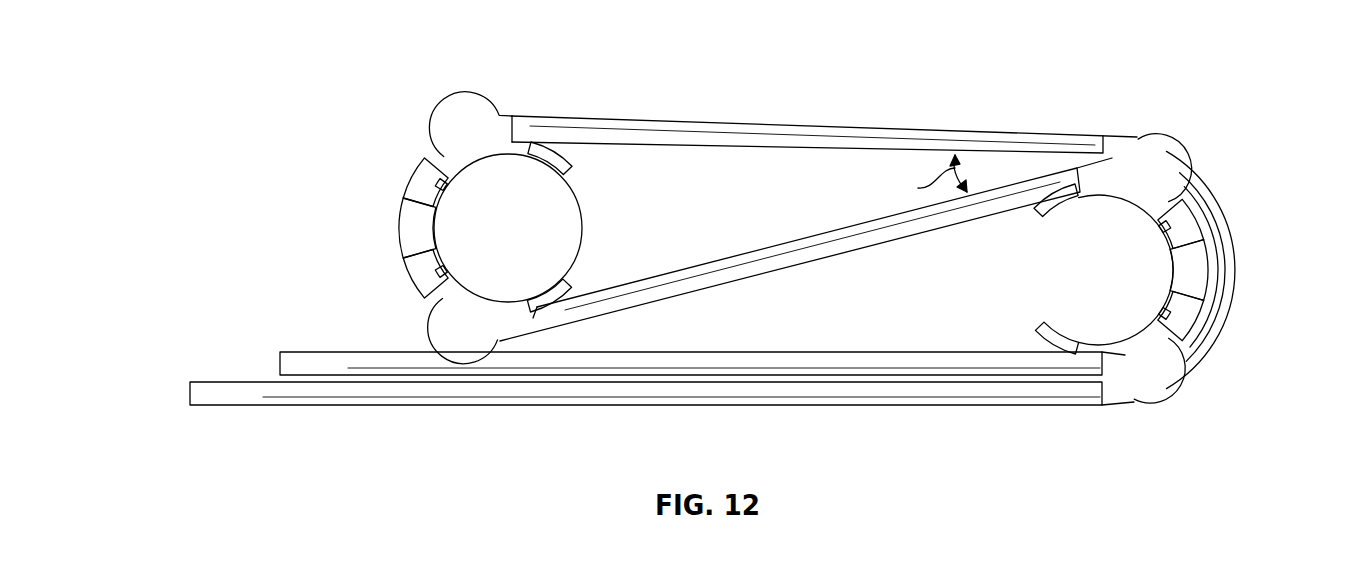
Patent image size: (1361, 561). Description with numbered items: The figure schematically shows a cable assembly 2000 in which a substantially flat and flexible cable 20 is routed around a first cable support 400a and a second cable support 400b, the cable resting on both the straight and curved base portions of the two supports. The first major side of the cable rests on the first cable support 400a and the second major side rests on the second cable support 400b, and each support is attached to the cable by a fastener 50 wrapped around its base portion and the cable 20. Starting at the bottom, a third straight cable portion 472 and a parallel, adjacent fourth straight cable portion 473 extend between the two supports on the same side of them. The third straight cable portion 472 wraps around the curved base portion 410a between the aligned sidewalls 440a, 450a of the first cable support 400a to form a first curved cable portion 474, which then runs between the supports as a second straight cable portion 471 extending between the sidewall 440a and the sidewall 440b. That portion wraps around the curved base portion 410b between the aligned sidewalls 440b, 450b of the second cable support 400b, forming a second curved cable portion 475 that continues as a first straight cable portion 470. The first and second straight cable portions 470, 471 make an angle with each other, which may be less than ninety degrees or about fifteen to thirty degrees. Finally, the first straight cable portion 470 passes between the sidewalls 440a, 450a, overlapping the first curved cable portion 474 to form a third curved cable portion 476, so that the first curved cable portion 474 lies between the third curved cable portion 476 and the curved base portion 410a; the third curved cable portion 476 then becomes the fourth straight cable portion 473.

The cable assembly 2000 is at (360, 75).
The substantially flat and flexible cable 20 is at (749, 125).
The first straight cable portion 470 is at (968, 142).
The second straight cable portion 471 is at (755, 250).
The third straight cable portion 472 is at (922, 352).
The fourth straight cable portion 473 is at (922, 398).
The first cable support 400a is at (1065, 330).
The second cable support 400b is at (547, 167).
The curved base portion of first cable support 410a is at (1177, 303).
The curved base portion of second cable support 410b is at (440, 262).
The sidewall of first cable support 440a is at (1152, 150).
The sidewall of second cable support 440b is at (440, 320).
The sidewall of first cable support 450a is at (1150, 387).
The sidewall of second cable support 450b is at (463, 103).
The first curved cable portion 474 is at (1187, 218).
The second curved cable portion 475 is at (423, 172).
The third curved cable portion 476 is at (1228, 247).
The fastener 50 is at (1200, 277).